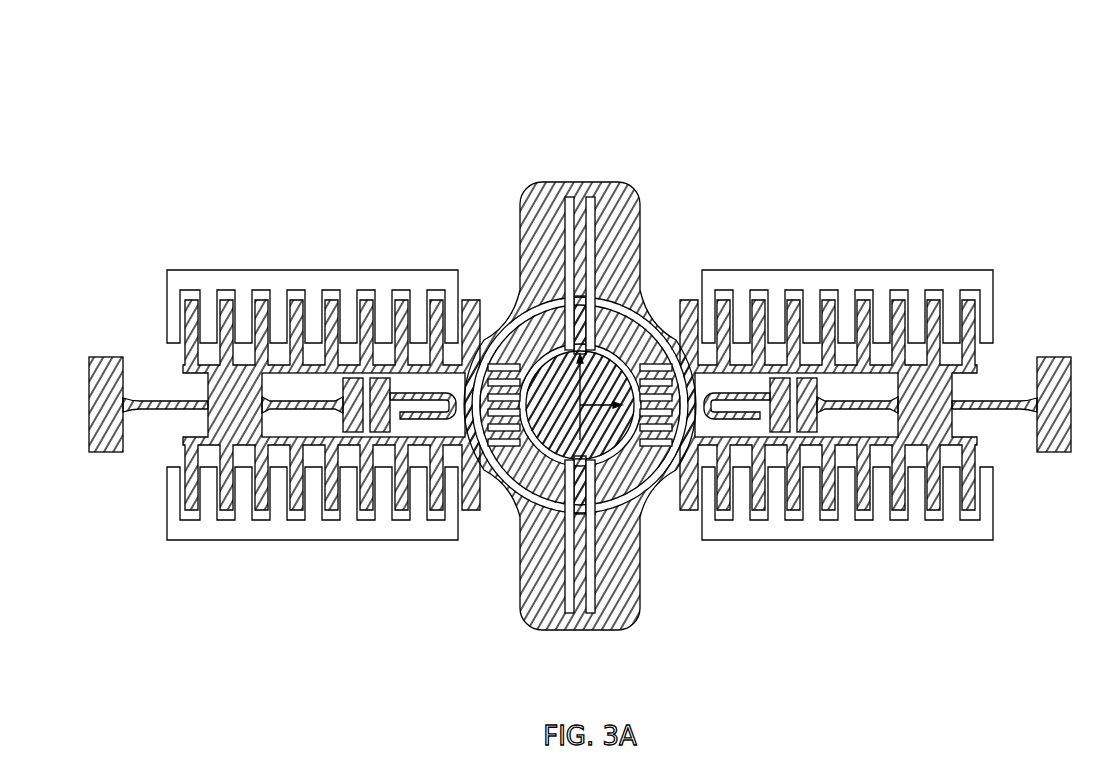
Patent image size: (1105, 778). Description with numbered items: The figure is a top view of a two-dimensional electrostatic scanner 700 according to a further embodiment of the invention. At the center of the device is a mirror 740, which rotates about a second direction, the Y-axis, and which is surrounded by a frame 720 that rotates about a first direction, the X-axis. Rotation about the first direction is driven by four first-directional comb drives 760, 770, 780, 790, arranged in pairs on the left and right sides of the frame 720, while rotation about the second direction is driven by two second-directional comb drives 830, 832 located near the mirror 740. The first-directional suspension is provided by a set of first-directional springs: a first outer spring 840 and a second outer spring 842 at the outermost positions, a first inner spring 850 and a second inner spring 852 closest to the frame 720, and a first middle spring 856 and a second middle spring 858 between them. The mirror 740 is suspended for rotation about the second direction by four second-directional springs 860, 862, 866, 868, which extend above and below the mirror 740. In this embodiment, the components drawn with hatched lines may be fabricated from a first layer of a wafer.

The two-dimensional electrostatic scanner 700 is at (880, 88).
The frame 720 is at (625, 262).
The mirror 740 is at (612, 388).
The first-directional comb drive 760 is at (1006, 298).
The first-directional comb drive 770 is at (153, 300).
The first-directional comb drive 780 is at (146, 502).
The first-directional comb drive 790 is at (1008, 500).
The second-directional comb drive 830 is at (622, 488).
The second-directional comb drive 832 is at (540, 488).
The first outer spring 840 is at (983, 403).
The second outer spring 842 is at (178, 403).
The first inner spring 850 is at (740, 407).
The second inner spring 852 is at (427, 407).
The first middle spring 856 is at (860, 407).
The second middle spring 858 is at (291, 406).
The second-directional spring 860 is at (581, 215).
The second-directional spring 862 is at (581, 490).
The second-directional spring 866 is at (575, 328).
The second-directional spring 868 is at (560, 488).